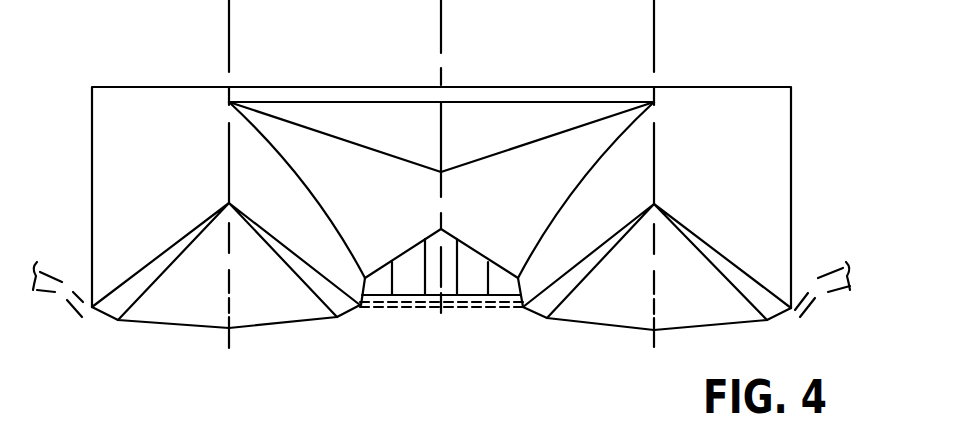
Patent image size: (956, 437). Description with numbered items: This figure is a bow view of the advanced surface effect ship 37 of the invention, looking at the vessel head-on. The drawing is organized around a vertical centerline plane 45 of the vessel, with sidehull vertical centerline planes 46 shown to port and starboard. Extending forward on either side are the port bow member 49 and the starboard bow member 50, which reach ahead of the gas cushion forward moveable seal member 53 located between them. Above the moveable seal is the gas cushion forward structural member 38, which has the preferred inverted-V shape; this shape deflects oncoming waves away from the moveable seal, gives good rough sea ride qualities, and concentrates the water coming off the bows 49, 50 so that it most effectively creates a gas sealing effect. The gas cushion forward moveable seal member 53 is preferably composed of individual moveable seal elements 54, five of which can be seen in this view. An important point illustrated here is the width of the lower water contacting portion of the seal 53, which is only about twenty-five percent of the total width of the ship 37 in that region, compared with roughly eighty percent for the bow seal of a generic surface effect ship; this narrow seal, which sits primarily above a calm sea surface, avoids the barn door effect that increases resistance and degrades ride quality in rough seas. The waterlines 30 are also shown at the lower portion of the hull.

The waterlines 30 is at (463, 310).
The advanced surface effect ship 37 is at (792, 210).
The gas cushion forward structural member 38 is at (486, 212).
The vertical centerline plane 45 is at (439, 35).
The sidehull vertical centerline planes 46 is at (228, 51).
The port bow member 49 is at (629, 300).
The starboard bow member 50 is at (208, 299).
The gas cushion forward moveable seal member 53 is at (408, 251).
The moveable seal elements 54 is at (408, 295).